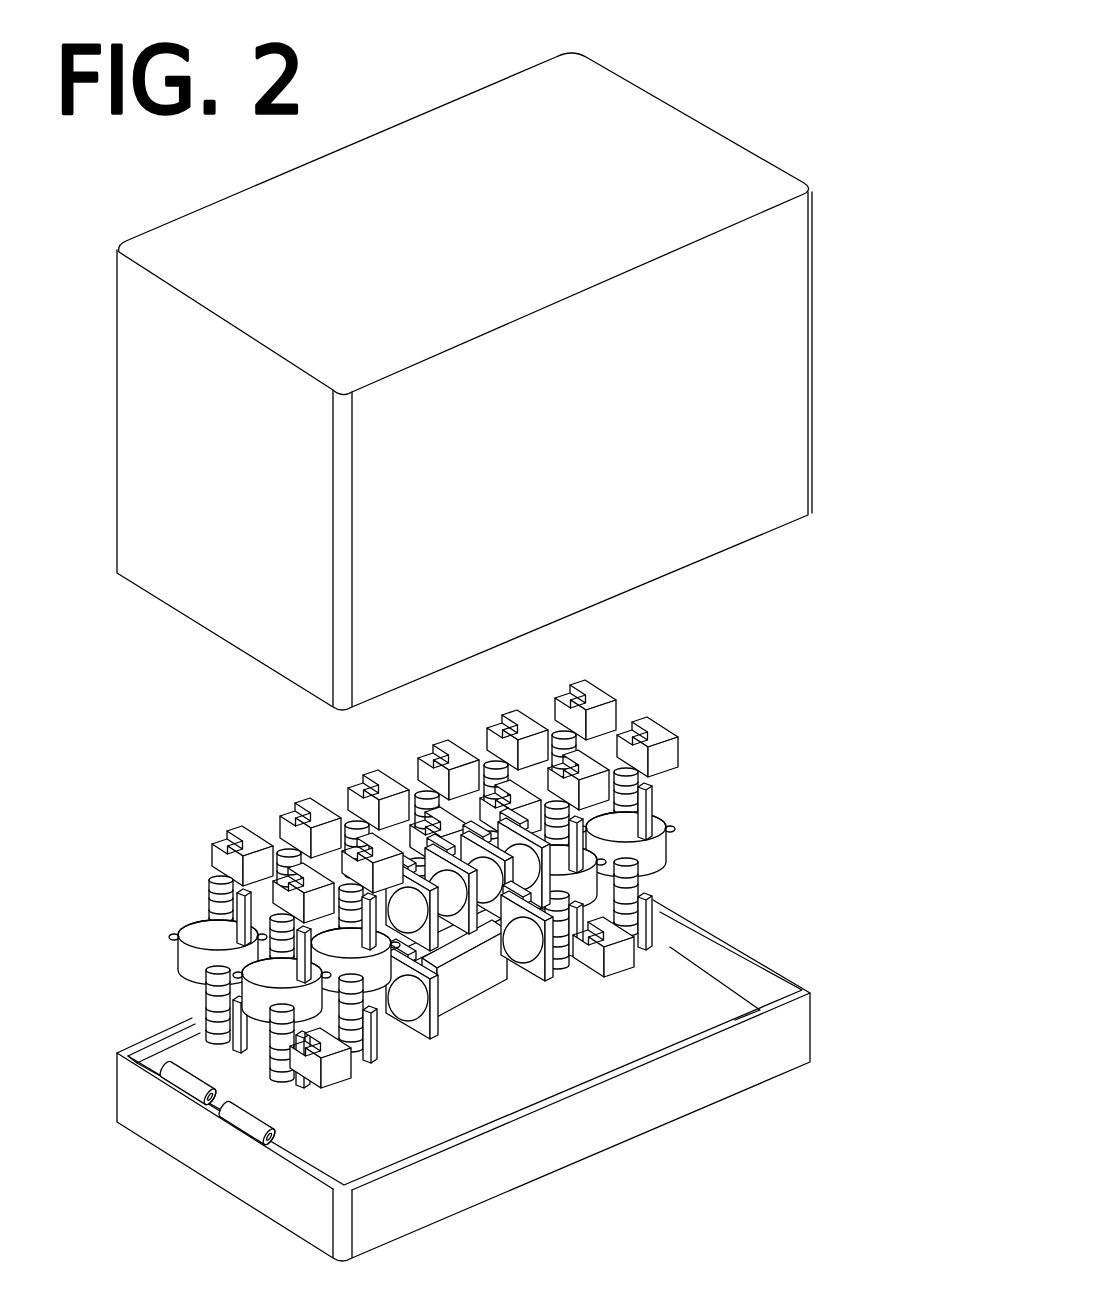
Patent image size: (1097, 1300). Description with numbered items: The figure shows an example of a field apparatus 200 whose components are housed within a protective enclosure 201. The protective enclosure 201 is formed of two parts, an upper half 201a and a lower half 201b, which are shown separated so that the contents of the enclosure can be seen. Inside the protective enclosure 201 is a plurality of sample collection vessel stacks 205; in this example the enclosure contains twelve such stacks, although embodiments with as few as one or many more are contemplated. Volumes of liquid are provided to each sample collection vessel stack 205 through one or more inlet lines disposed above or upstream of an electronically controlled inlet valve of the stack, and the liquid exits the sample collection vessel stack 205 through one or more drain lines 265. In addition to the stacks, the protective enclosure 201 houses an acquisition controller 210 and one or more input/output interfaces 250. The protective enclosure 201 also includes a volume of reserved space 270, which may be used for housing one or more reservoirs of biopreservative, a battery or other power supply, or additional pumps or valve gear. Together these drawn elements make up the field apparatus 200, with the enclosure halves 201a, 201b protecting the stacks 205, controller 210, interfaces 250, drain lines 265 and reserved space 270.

The field apparatus 200 is at (757, 93).
The protective enclosure 201 is at (851, 190).
The upper half 201a is at (215, 641).
The lower half 201b is at (130, 1022).
The sample collection vessel stack 205 is at (680, 717).
The acquisition controller 210 is at (413, 1007).
The input/output interface 250 is at (457, 975).
The drain line 265 is at (270, 1106).
The reserved space 270 is at (483, 1107).